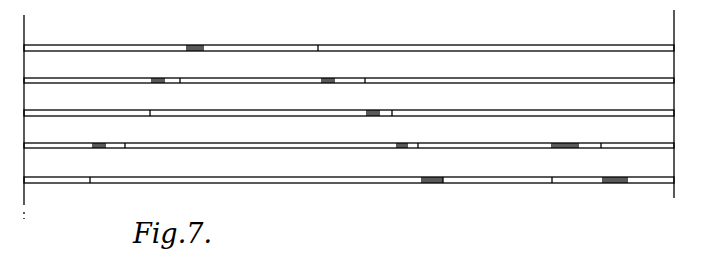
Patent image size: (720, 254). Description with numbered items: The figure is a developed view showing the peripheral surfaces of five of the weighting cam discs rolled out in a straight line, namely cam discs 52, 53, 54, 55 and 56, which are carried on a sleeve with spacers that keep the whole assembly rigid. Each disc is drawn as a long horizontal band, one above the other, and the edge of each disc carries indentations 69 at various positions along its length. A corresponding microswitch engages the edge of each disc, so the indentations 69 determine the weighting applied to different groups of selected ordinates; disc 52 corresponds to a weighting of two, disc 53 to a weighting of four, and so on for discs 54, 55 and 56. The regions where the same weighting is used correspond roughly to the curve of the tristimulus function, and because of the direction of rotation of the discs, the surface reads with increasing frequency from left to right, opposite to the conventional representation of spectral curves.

The cam disc 52 is at (131, 177).
The cam disc 53 is at (131, 143).
The cam disc 54 is at (130, 110).
The cam disc 55 is at (131, 78).
The cam disc 56 is at (133, 45).
The indentations 69 is at (380, 110).